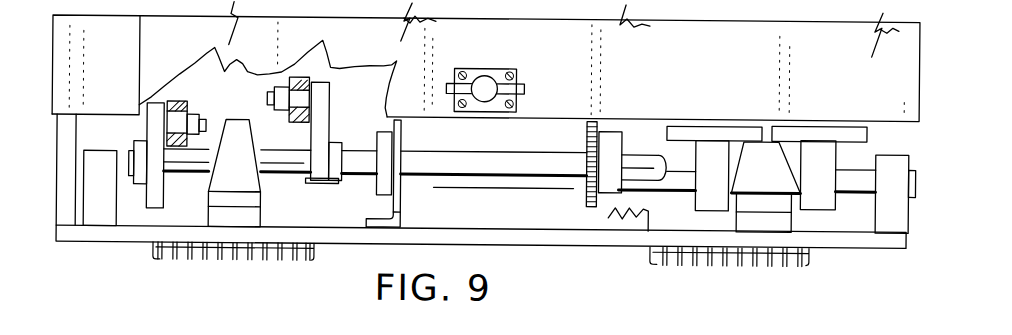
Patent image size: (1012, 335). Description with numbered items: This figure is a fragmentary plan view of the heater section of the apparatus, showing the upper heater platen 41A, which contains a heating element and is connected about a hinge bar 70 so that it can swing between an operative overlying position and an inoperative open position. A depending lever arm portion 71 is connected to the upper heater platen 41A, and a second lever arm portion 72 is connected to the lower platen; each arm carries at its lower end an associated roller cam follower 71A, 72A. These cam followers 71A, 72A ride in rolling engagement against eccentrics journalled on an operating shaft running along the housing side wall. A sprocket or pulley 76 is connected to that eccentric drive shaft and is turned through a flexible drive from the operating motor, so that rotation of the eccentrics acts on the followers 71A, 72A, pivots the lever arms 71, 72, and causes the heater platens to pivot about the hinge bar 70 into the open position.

The upper heater platen 41A is at (900, 61).
The hinge bar 70 is at (267, 163).
The lever arm portion 71 is at (332, 120).
The roller cam follower 71A is at (310, 78).
The lever arm portion 72 is at (155, 203).
The roller cam follower 72A is at (178, 100).
The sprocket or pulley 76 is at (587, 190).